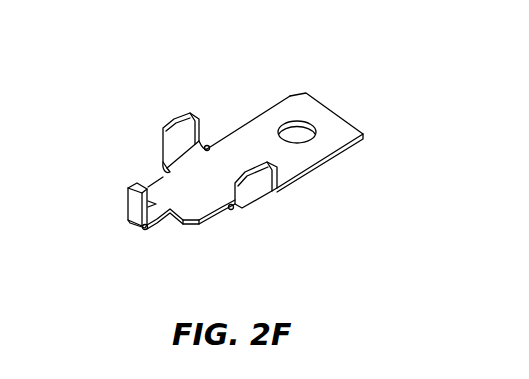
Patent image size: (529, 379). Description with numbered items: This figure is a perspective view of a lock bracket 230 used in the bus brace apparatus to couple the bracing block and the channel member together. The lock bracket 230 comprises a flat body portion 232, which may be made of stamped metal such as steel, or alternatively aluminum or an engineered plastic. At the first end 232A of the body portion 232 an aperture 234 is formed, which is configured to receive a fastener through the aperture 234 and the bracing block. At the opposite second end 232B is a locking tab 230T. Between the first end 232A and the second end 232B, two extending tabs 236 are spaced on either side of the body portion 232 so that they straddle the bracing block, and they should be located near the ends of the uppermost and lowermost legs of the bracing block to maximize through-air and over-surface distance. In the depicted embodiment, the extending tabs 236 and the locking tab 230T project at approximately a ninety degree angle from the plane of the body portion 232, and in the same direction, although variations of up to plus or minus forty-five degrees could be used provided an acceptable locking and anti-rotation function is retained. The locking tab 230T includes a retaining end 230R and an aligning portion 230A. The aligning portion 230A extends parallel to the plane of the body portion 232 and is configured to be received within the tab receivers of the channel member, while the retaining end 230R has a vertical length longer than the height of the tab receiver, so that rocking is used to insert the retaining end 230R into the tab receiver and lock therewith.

The lock bracket 230 is at (199, 85).
The body portion 232 is at (322, 168).
The first end 232A is at (346, 106).
The second end 232B is at (121, 230).
The aperture 234 is at (292, 124).
The extending tabs 236 is at (174, 120).
The locking tab 230T is at (118, 182).
The retaining end 230R is at (127, 207).
The aligning portion 230A is at (160, 226).